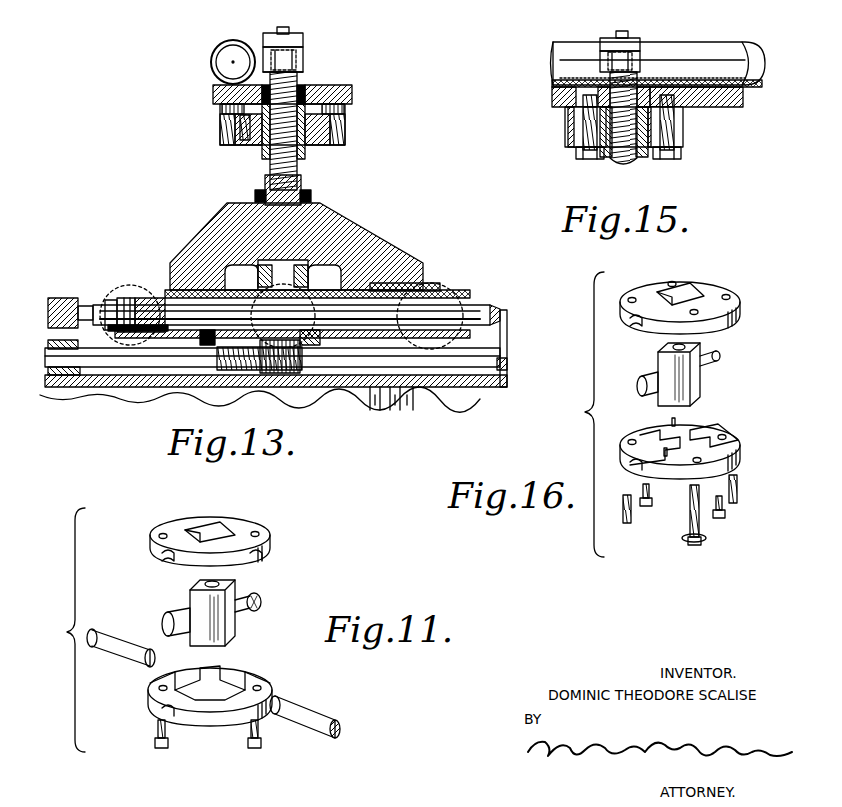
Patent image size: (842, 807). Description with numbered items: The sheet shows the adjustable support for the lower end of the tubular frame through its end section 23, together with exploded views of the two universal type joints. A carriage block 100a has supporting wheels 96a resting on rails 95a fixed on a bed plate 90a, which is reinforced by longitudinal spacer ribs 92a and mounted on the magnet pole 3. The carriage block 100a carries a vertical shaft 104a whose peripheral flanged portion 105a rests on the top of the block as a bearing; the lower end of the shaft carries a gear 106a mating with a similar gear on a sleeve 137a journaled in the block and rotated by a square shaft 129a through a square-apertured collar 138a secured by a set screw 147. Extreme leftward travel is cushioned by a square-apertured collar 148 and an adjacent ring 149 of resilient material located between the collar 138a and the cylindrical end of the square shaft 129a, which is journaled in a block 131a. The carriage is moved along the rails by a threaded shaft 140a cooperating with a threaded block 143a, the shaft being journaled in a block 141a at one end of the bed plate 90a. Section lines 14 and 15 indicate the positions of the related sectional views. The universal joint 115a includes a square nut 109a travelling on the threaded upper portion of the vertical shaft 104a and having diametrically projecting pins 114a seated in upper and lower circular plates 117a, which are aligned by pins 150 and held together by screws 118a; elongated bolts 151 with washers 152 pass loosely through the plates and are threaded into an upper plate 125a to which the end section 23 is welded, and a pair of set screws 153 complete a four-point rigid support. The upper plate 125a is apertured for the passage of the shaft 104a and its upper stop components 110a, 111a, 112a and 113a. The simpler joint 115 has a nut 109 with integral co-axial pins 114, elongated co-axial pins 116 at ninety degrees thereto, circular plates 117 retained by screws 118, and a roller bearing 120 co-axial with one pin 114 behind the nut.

In FIG. 13, the magnet pole 3 is at (413, 400).
In FIG. 13, the section line 14 is at (220, 105).
In FIG. 13, the section line 15 is at (282, 27).
In FIG. 13, the end section 23 is at (222, 45).
In FIG. 15, the end section 23 is at (718, 42).
In FIG. 13, the bed plate 90a is at (497, 388).
In FIG. 13, the longitudinal spacer ribs 92a is at (506, 322).
In FIG. 13, the rails 95a is at (508, 364).
In FIG. 13, the supporting wheels 96a is at (460, 338).
In FIG. 13, the carriage block 100a is at (383, 226).
In FIG. 13, the vertical shaft 104a is at (262, 215).
In FIG. 15, the vertical shaft 104a is at (642, 88).
In FIG. 13, the peripheral flanged portion 105a is at (312, 196).
In FIG. 13, the gear 106a is at (232, 270).
In FIG. 11, the nut 109 is at (226, 626).
In FIG. 13, the square nut 109a is at (298, 162).
In FIG. 15, the square nut 109a is at (630, 162).
In FIG. 16, the square nut 109a is at (698, 384).
In FIG. 13, the upper stop component 110a is at (297, 62).
In FIG. 15, the upper stop component 110a is at (640, 58).
In FIG. 13, the upper stop component 111a is at (303, 52).
In FIG. 15, the upper stop component 111a is at (601, 54).
In FIG. 13, the upper stop component 112a is at (303, 40).
In FIG. 15, the upper stop component 112a is at (636, 40).
In FIG. 13, the upper stop component 113a is at (286, 27).
In FIG. 15, the upper stop component 113a is at (616, 34).
In FIG. 11, the pins 114 is at (184, 610).
In FIG. 13, the pins 114a is at (315, 135).
In FIG. 15, the pins 114a is at (604, 160).
In FIG. 16, the pins 114a is at (712, 354).
In FIG. 11, the universal type joint 115 is at (138, 676).
In FIG. 13, the universal joint 115a is at (214, 136).
In FIG. 15, the universal joint 115a is at (548, 112).
In FIG. 16, the universal joint 115a is at (752, 298).
In FIG. 11, the elongated co-axial pins 116 is at (122, 632).
In FIG. 11, the circular plates 117 is at (150, 529).
In FIG. 13, the circular plates 117a is at (340, 125).
In FIG. 15, the circular plates 117a is at (672, 115).
In FIG. 16, the circular plates 117a is at (652, 320).
In FIG. 11, the screws 118 is at (248, 742).
In FIG. 13, the screws 118a is at (245, 142).
In FIG. 16, the screws 118a is at (727, 514).
In FIG. 11, the roller bearing 120 is at (256, 594).
In FIG. 13, the upper plate 125a is at (350, 90).
In FIG. 15, the upper plate 125a is at (553, 92).
In FIG. 13, the square shaft 129a is at (472, 300).
In FIG. 13, the block 131a is at (52, 300).
In FIG. 13, the sleeve 137a is at (422, 290).
In FIG. 13, the square-apertured collar 138a is at (132, 300).
In FIG. 13, the threaded shaft 140a is at (215, 368).
In FIG. 13, the block 141a is at (48, 345).
In FIG. 13, the threaded block 143a is at (288, 374).
In FIG. 13, the set screw 147 is at (152, 298).
In FIG. 13, the square-apertured collar 148 is at (108, 300).
In FIG. 13, the ring 149 is at (122, 300).
In FIG. 16, the pins 150 is at (700, 422).
In FIG. 15, the elongated bolts 151 is at (572, 134).
In FIG. 16, the elongated bolts 151 is at (694, 548).
In FIG. 15, the washers 152 is at (566, 152).
In FIG. 16, the washers 152 is at (705, 542).
In FIG. 13, the set screws 153 is at (218, 95).
In FIG. 16, the set screws 153 is at (738, 494).